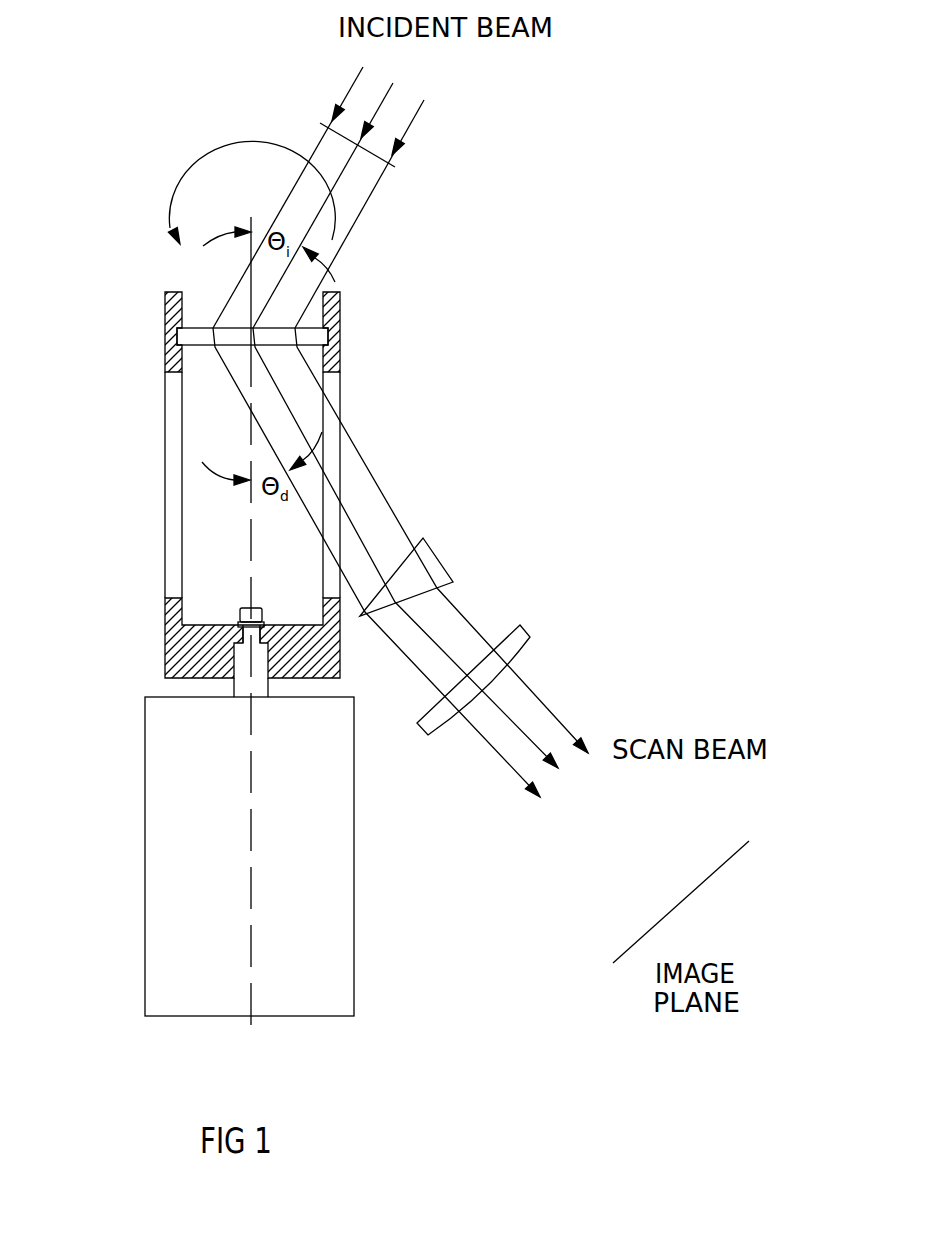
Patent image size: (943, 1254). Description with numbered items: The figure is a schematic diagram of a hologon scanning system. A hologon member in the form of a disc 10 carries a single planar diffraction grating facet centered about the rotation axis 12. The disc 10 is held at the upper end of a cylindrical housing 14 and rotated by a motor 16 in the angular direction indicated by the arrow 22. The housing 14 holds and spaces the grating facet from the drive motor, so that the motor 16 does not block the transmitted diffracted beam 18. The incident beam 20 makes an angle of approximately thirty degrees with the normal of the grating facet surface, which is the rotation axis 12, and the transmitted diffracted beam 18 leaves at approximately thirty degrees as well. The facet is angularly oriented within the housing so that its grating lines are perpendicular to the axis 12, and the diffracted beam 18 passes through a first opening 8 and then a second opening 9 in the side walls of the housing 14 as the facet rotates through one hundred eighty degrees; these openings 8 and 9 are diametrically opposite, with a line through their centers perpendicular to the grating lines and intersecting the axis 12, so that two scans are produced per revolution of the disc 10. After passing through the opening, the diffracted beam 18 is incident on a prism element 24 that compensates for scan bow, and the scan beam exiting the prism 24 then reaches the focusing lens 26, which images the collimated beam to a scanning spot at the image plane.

The first opening 8 is at (243, 445).
The second opening 9 is at (167, 525).
The hologon disc 10 is at (322, 340).
The rotation axis 12 is at (250, 596).
The cylindrical housing 14 is at (333, 673).
The motor 16 is at (348, 827).
The transmitted diffracted beam 18 is at (368, 462).
The incident beam 20 is at (382, 182).
The arrow indicating angular rotation 22 is at (163, 218).
The prism element 24 is at (432, 563).
The focusing lens 26 is at (522, 635).